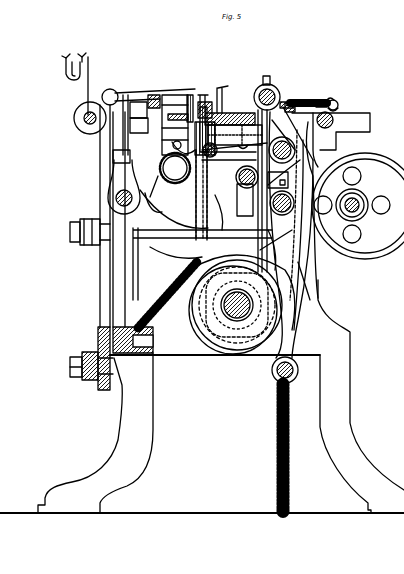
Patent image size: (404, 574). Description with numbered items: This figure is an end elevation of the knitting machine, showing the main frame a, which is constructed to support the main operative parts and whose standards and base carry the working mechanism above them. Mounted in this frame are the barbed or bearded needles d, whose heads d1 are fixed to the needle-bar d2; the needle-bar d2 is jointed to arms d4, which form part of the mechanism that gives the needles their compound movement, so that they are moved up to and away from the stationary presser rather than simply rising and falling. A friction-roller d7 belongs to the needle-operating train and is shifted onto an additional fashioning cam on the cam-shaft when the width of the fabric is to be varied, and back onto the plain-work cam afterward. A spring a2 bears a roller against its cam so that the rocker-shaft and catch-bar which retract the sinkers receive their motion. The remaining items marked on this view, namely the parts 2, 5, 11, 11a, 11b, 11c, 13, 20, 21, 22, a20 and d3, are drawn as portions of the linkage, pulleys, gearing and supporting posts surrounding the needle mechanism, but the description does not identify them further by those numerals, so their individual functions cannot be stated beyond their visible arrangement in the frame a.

The hook arm 2 is at (83, 89).
The gear 5 is at (315, 99).
The lever 11 is at (258, 221).
The lever arm 11a is at (282, 135).
The lever pivot 11b is at (330, 102).
The lever roller 11c is at (337, 104).
The pulley 13 is at (270, 95).
The rod 20 is at (224, 94).
The bracket post 21 is at (157, 203).
The pin 22 is at (270, 76).
The main frame a is at (221, 312).
The spring a2 is at (300, 374).
The fly wheel a20 is at (358, 206).
The barbed needles d is at (214, 252).
The needle heads d1 is at (278, 126).
The needle-bar d2 is at (171, 273).
The cam d3 is at (221, 212).
The arms d4 is at (278, 249).
The friction-roller d7 is at (304, 276).